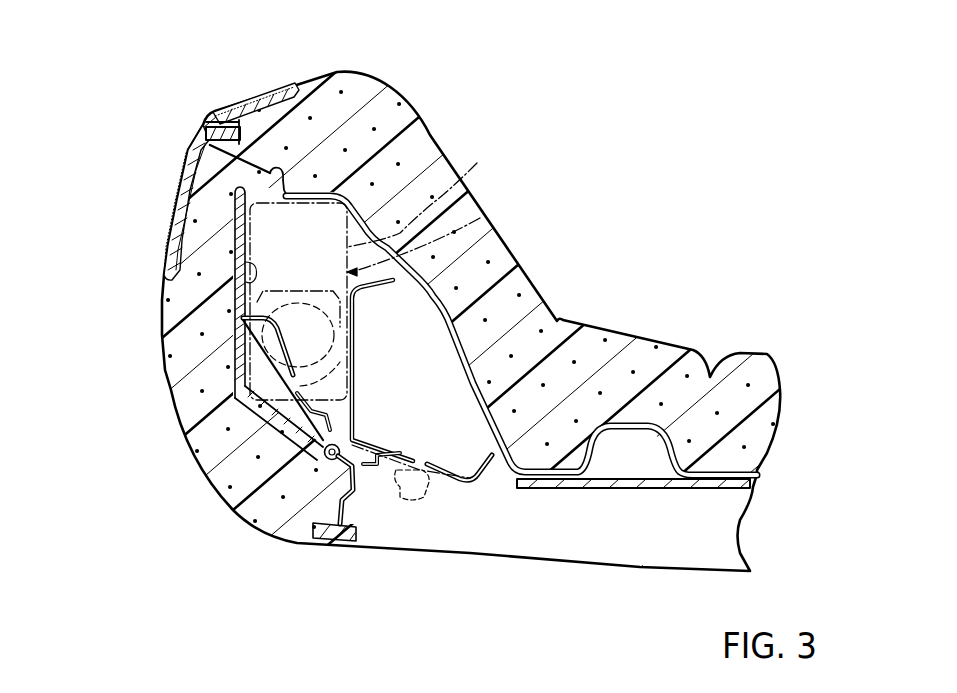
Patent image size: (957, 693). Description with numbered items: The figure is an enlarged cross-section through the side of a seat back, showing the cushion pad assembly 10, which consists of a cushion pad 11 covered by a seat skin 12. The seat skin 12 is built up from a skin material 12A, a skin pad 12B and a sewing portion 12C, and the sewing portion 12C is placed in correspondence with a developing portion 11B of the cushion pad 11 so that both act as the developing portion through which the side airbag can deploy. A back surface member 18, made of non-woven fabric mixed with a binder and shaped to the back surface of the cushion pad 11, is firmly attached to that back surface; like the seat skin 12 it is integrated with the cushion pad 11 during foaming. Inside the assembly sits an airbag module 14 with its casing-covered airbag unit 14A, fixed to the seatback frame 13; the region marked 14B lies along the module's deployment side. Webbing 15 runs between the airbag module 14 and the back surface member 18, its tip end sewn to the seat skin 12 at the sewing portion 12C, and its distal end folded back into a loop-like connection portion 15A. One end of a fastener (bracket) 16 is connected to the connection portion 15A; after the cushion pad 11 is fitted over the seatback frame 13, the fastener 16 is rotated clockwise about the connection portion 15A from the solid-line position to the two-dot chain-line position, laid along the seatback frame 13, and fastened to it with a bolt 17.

The cushion pad assembly 10 is at (656, 318).
The cushion pad 11 is at (377, 117).
The developing portion 11B is at (279, 176).
The seat skin 12 is at (216, 107).
The skin material 12A is at (172, 204).
The skin pad 12B is at (177, 247).
The sewing portion 12C is at (237, 126).
The seatback frame 13 is at (493, 470).
The airbag module 14 is at (480, 218).
The airbag unit 14A is at (330, 380).
The airbag deployment path 14B is at (477, 163).
The webbing 15 is at (240, 288).
The connection portion 15A is at (330, 458).
The fastener (bracket) 16 is at (242, 391).
The bolt 17 is at (416, 497).
The back surface member 18 is at (240, 339).